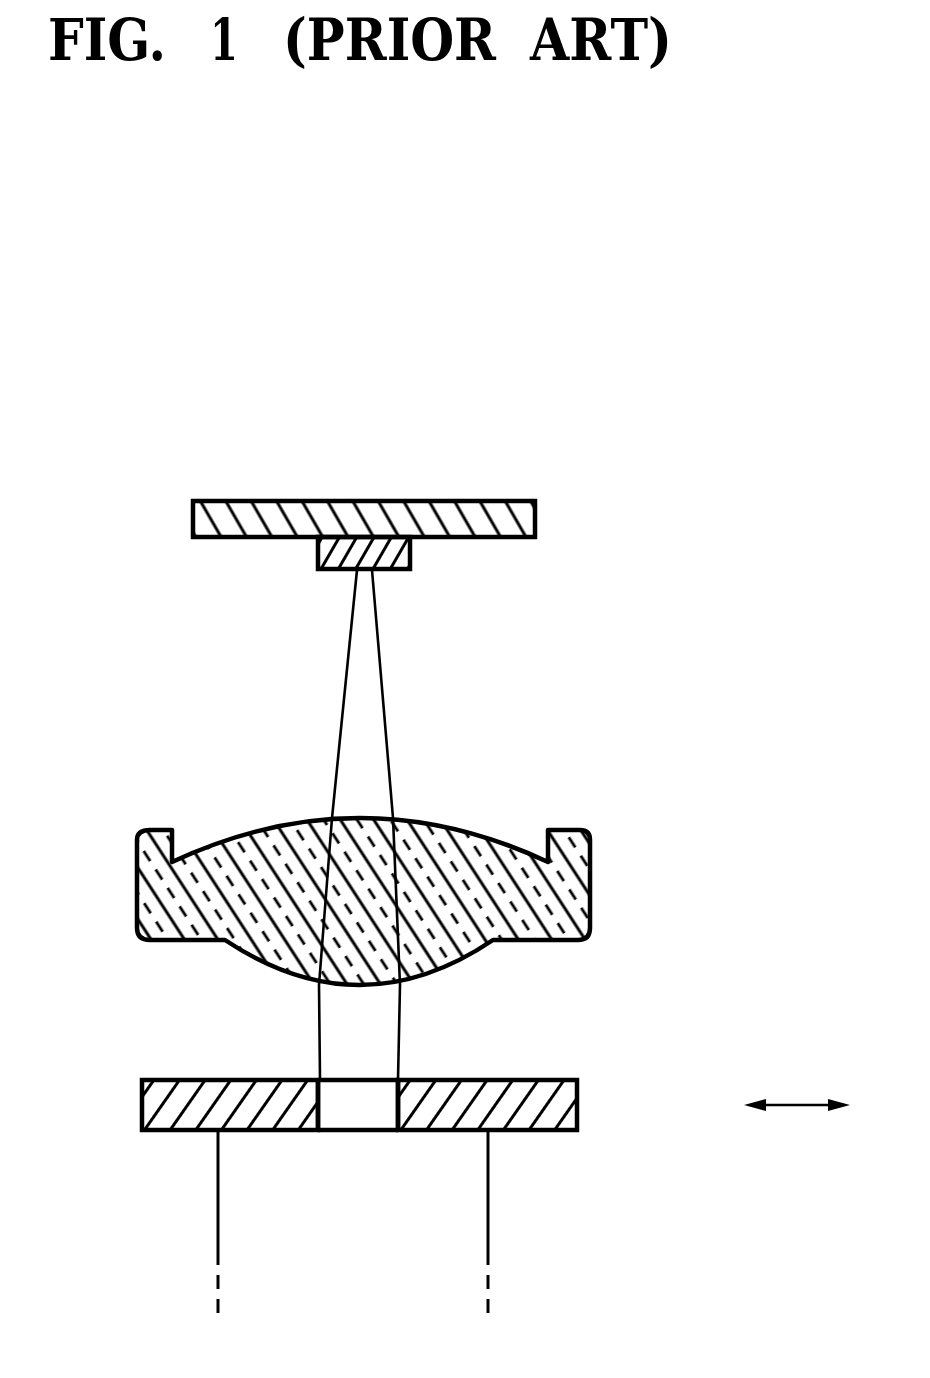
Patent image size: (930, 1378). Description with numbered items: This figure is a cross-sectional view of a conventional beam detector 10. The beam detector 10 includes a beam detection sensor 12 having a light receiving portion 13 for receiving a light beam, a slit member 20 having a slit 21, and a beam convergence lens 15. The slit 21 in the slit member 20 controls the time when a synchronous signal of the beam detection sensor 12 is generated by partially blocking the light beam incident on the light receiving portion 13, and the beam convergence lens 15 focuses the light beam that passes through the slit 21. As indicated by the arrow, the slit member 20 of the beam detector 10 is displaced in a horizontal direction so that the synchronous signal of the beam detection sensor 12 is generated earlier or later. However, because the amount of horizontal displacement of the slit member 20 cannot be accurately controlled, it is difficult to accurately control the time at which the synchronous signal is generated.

The beam detector 10 is at (178, 436).
The beam detection sensor 12 is at (411, 496).
The light receiving portion 13 is at (410, 569).
The beam convergence lens 15 is at (592, 890).
The slit member 20 is at (578, 1113).
The slit 21 is at (365, 1125).